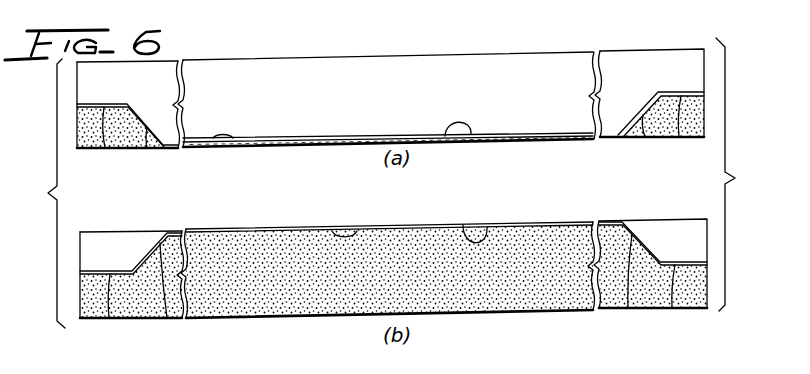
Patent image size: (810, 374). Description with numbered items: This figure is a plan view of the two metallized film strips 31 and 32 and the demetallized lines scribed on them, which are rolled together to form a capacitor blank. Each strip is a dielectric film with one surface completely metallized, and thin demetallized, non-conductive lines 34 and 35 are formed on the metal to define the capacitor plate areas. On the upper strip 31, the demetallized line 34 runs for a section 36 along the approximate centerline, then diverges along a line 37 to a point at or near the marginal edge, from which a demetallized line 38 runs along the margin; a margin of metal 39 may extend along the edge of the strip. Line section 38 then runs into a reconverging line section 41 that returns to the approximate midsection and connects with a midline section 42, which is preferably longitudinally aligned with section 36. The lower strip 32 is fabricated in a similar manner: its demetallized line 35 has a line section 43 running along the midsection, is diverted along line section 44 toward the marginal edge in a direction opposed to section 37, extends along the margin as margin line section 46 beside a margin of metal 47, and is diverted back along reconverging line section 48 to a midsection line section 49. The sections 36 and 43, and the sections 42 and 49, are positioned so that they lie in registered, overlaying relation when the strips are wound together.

The metallized film strip 31 is at (369, 57).
The metallized film strip 32 is at (460, 313).
The demetallized line 34 is at (471, 134).
The demetallized line 35 is at (487, 228).
The line section 36 is at (101, 149).
The diverging line section 37 is at (145, 149).
The demetallized margin line section 38 is at (239, 141).
The margin of metal 39 is at (283, 148).
The reconverging line section 41 is at (647, 138).
The midline section 42 is at (679, 138).
The line section 43 is at (107, 319).
The diverted line section 44 is at (167, 319).
The margin line section 46 is at (362, 218).
The margin of metal 47 is at (420, 223).
The reconverging line section 48 is at (628, 309).
The line section 49 is at (672, 309).